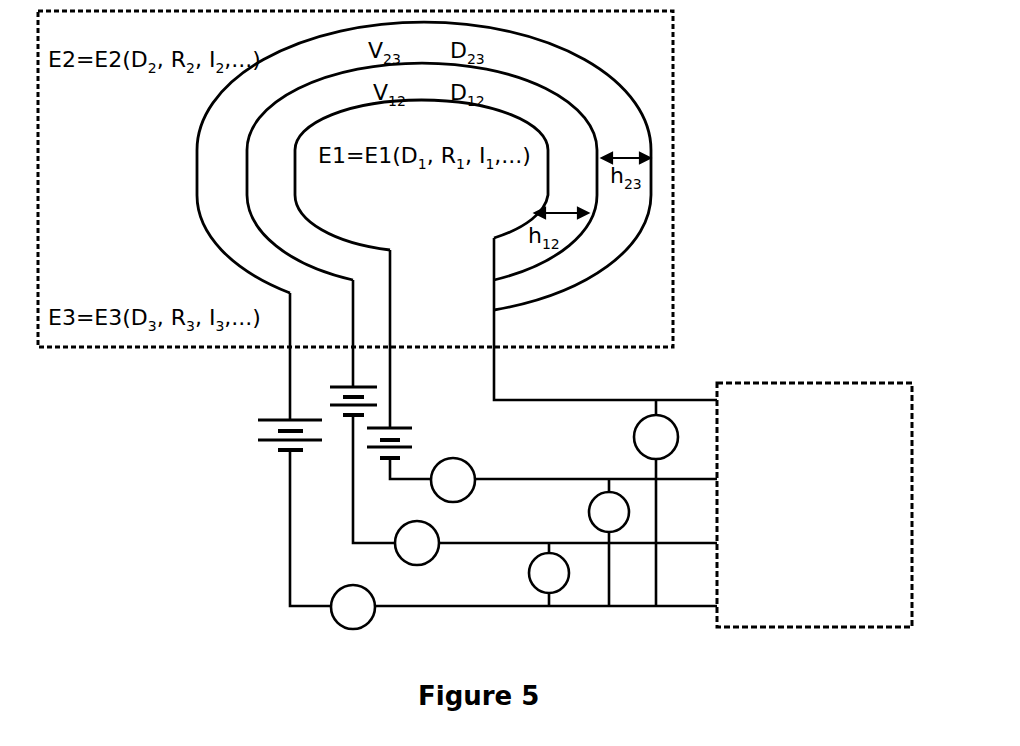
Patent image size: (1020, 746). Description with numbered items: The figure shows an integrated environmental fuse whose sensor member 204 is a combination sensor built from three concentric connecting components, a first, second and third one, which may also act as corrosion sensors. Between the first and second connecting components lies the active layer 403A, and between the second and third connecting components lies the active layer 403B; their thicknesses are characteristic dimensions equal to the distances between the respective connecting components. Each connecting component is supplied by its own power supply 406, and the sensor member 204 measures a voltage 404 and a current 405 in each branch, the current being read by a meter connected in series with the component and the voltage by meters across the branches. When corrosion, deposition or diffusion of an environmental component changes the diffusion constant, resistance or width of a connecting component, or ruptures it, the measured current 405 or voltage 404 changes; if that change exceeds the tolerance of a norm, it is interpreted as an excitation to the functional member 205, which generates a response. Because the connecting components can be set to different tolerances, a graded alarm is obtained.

The sensor member 204 is at (675, 175).
The functional member 205 is at (752, 383).
The active layer 403A is at (562, 77).
The active layer 403B is at (565, 160).
The voltage 404 is at (634, 435).
The current 405 is at (473, 468).
The power supply 406 is at (269, 419).